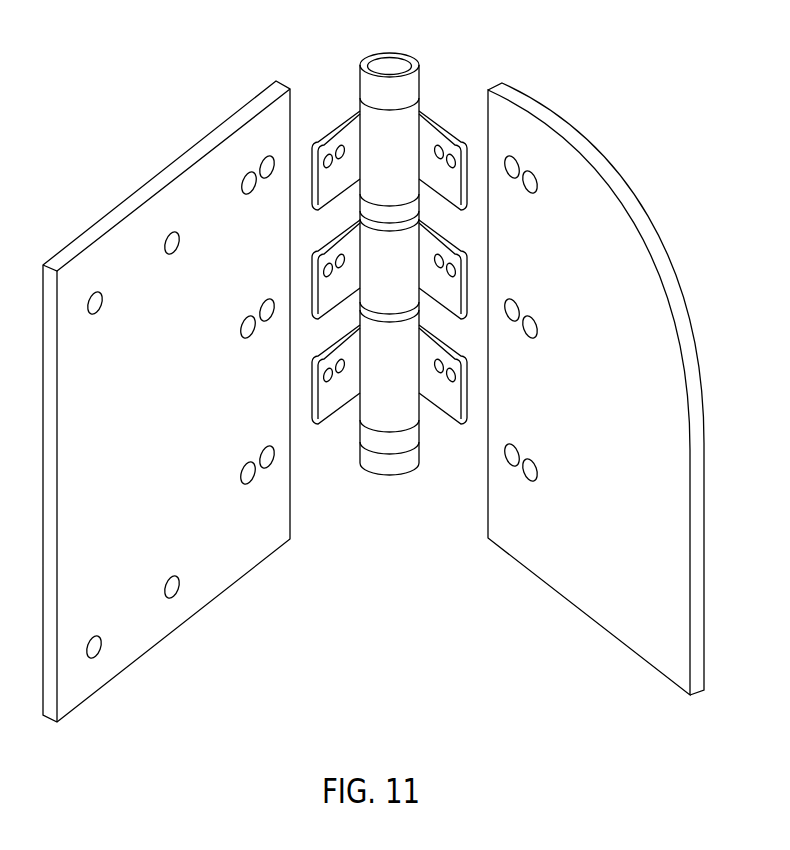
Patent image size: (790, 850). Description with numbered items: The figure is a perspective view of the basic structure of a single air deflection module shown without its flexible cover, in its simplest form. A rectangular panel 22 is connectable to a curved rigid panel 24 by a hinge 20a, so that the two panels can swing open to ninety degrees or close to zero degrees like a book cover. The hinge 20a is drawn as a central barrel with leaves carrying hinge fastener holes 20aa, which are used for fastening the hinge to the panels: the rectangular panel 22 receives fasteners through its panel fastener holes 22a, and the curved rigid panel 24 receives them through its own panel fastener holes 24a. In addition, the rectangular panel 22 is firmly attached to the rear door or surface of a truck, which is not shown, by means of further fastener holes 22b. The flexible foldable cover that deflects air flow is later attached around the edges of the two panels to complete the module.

The hinge 20a is at (383, 61).
The hinge fastener holes 20aa is at (329, 157).
The rectangular panel 22 is at (167, 173).
The panel fastener holes 22a is at (249, 194).
The fastener holes 22b is at (96, 314).
The curved rigid panel 24 is at (608, 172).
The panel fastener holes 24a is at (530, 193).